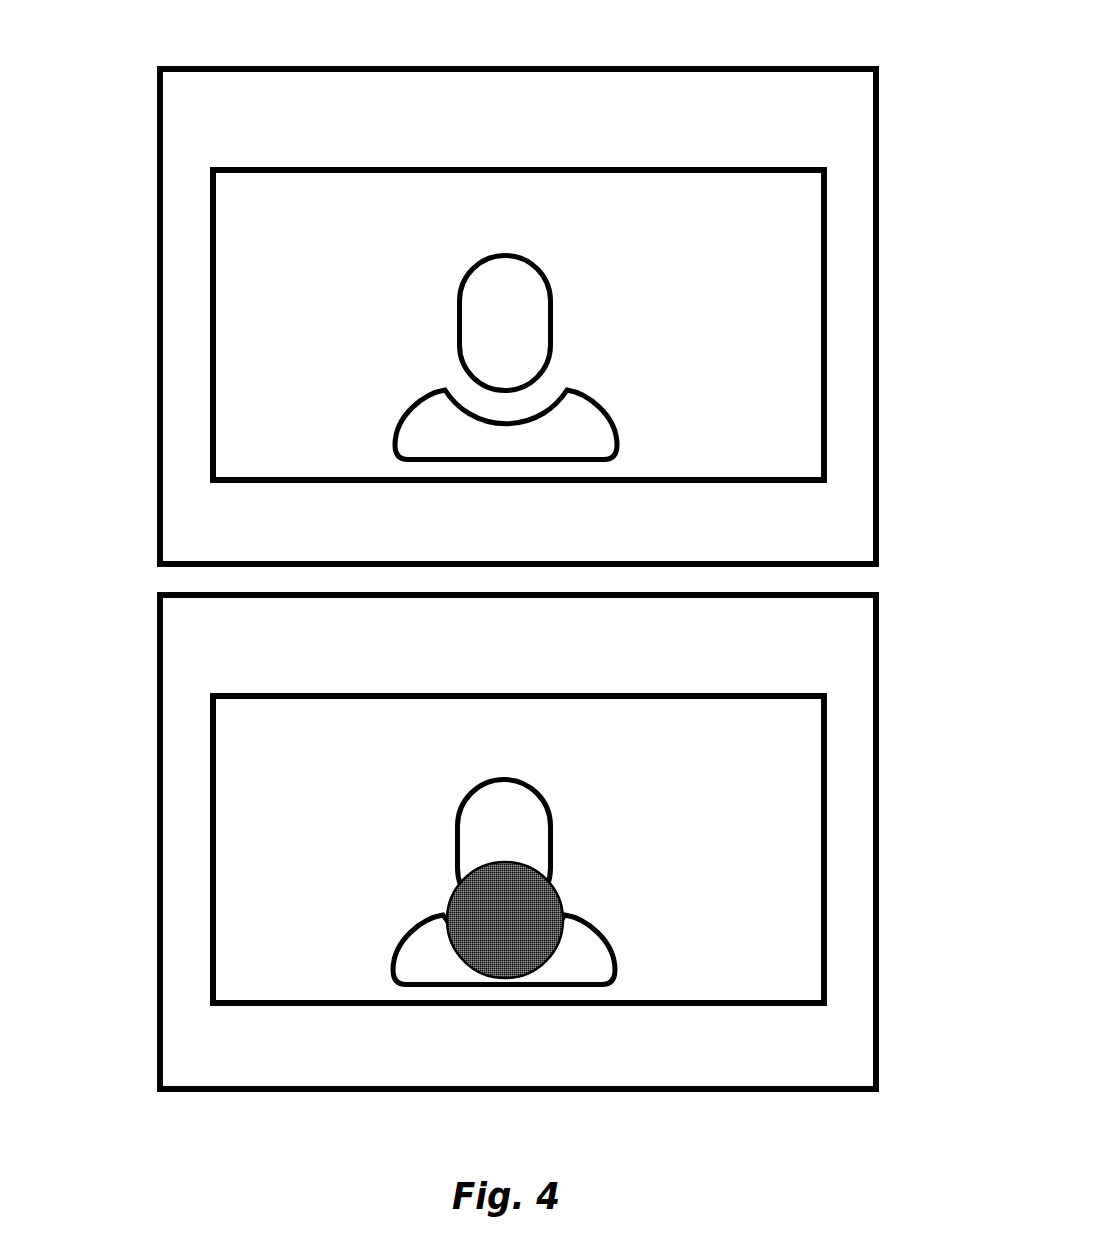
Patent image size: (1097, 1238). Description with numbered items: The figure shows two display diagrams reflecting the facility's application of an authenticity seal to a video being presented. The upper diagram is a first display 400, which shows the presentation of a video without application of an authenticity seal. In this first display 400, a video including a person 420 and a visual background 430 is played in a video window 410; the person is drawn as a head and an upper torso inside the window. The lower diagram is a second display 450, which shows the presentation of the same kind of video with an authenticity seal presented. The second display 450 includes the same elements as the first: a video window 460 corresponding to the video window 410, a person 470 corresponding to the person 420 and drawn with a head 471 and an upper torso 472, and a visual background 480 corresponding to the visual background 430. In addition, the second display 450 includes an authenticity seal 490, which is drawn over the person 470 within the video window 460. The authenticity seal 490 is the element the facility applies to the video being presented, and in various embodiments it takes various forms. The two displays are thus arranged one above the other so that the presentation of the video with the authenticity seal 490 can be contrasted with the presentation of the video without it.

The first display 400 is at (876, 68).
The video window 410 is at (826, 170).
The person 420 is at (449, 357).
The visual background 430 is at (499, 284).
The second display 450 is at (879, 596).
The video thumbnail 460 is at (826, 697).
The person image in video thumbnail 470 is at (568, 873).
The head of person image 471 is at (545, 798).
The shoulders/body of person image 472 is at (593, 925).
The video thumbnail region indicator 480 is at (506, 810).
The authenticity seal 490 is at (455, 913).